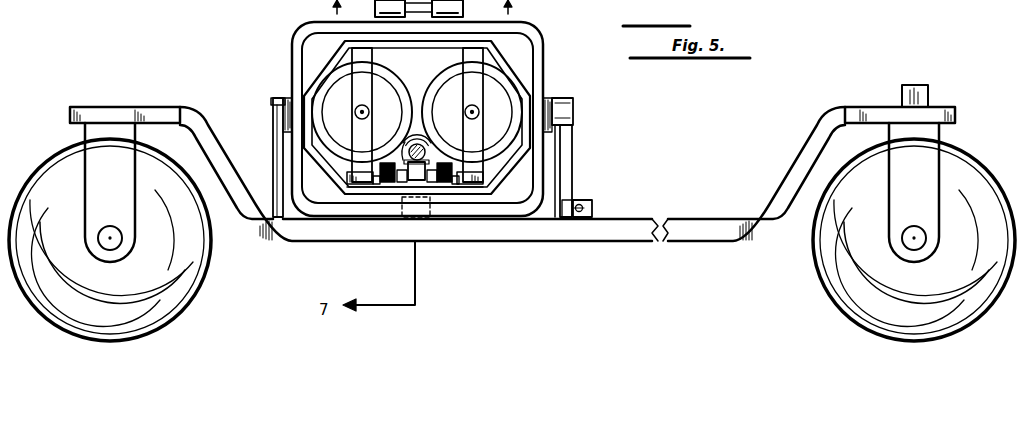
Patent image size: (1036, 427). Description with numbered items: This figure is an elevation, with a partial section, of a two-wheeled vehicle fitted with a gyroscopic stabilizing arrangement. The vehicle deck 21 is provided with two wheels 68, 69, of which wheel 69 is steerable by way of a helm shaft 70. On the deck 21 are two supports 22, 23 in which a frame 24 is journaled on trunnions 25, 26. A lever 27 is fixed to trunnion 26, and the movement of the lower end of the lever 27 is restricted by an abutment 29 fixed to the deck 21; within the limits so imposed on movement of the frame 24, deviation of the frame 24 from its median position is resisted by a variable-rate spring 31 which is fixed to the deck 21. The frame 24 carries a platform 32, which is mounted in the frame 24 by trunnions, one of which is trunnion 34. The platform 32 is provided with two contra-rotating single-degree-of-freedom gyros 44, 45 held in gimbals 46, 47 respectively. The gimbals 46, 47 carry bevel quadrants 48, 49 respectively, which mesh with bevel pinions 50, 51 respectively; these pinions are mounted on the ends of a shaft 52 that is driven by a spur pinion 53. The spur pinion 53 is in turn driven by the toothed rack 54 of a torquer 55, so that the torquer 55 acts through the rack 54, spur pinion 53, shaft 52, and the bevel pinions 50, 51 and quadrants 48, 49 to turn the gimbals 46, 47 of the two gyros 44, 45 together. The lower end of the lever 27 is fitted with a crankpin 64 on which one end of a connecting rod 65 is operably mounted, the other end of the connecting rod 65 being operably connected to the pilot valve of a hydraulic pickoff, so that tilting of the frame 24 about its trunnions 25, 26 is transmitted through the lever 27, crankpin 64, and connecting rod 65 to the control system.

The vehicle deck 21 is at (627, 241).
The support 22 is at (282, 136).
The support 23 is at (549, 100).
The frame 24 is at (293, 40).
The trunnion 25 is at (273, 105).
The trunnion 26 is at (576, 102).
The lever 27 is at (573, 136).
The abutment 29 is at (566, 220).
The variable-rate spring 31 is at (430, 216).
The platform 32 is at (312, 68).
The trunnion 34 is at (410, 208).
The gyro 44 is at (404, 100).
The gyro 45 is at (503, 82).
The gimbal 46 is at (365, 72).
The gimbal 47 is at (463, 60).
The bevel quadrant 48 is at (372, 185).
The bevel quadrant 49 is at (450, 182).
The bevel pinion 50 is at (381, 165).
The bevel pinion 51 is at (424, 183).
The shaft 52 is at (452, 165).
The spur pinion 53 is at (407, 184).
The toothed rack 54 is at (404, 150).
The torquer 55 is at (424, 146).
The crankpin 64 is at (593, 207).
The connecting rod 65 is at (581, 204).
The wheel 68 is at (200, 262).
The wheel 69 is at (975, 165).
The helm shaft 70 is at (921, 86).